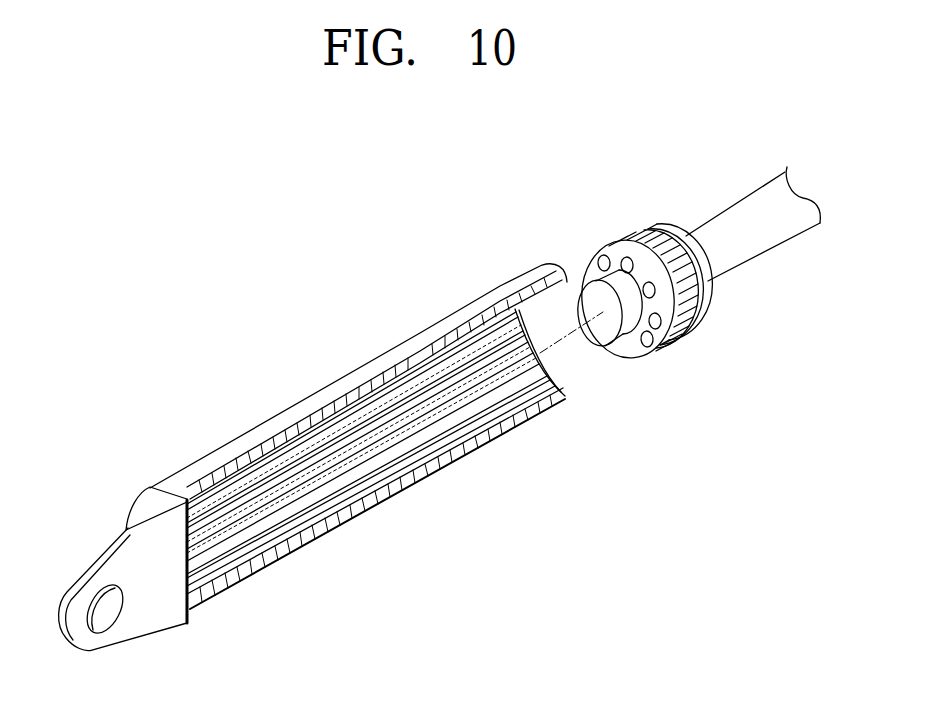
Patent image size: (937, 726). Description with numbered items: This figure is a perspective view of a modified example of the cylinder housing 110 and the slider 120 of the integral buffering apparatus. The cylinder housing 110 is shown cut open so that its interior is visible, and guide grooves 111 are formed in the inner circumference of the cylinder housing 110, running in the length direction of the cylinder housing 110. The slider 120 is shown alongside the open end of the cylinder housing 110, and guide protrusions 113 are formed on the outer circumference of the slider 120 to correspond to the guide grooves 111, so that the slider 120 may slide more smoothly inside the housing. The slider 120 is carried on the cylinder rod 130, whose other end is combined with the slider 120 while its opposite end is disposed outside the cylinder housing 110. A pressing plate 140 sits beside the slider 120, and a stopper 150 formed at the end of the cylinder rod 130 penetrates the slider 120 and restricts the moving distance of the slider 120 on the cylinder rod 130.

The cylinder housing 110 is at (269, 582).
The guide grooves 111 is at (352, 489).
The guide protrusions 113 is at (622, 236).
The slider 120 is at (676, 350).
The cylinder rod 130 is at (747, 193).
The pressing plate 140 is at (667, 238).
The stopper 150 is at (611, 345).